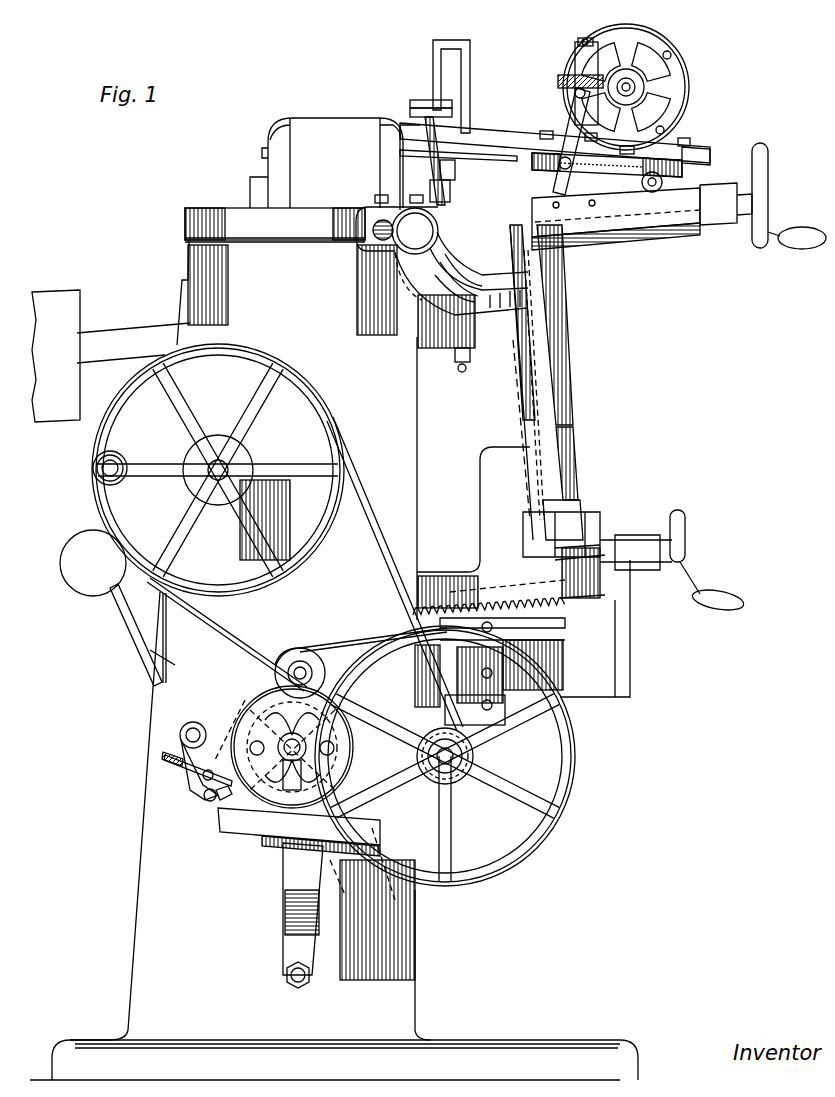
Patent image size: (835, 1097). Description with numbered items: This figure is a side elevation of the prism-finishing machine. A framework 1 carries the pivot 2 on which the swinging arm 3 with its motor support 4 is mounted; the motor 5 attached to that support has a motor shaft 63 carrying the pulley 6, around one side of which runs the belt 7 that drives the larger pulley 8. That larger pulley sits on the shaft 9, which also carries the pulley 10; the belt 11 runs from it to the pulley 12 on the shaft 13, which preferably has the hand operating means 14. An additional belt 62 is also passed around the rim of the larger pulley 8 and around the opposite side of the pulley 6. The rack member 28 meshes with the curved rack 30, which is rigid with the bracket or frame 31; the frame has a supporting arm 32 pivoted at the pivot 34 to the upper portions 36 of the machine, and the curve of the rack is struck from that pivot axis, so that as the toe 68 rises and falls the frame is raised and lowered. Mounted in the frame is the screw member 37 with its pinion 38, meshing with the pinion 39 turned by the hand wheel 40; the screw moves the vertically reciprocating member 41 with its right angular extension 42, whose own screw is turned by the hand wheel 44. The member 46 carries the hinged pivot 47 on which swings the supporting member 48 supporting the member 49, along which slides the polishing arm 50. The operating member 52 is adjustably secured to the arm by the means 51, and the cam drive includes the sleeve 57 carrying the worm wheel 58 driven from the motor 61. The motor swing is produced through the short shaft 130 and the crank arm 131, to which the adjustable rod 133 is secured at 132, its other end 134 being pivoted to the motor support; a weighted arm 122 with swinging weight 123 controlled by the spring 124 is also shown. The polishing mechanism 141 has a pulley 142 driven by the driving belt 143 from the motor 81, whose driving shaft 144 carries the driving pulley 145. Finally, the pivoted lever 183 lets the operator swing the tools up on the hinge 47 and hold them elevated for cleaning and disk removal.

The framework 1 is at (140, 893).
The pivot 2 is at (288, 975).
The swinging arm 3 is at (296, 878).
The motor support 4 is at (236, 834).
The motor 5 is at (262, 706).
The pulley 6 is at (256, 716).
The belt 7 is at (352, 648).
The larger pulley 8 is at (556, 770).
The shaft 9 is at (472, 755).
The pulley 10 is at (452, 782).
The belt 11 is at (372, 548).
The pulley 12 is at (252, 577).
The shaft 13 is at (224, 466).
The hand operating means 14 is at (100, 468).
The rack member 28 is at (560, 636).
The curved rack 30 is at (480, 580).
The bracket or frame 31 is at (525, 404).
The supporting arm 32 is at (474, 272).
The pivot 34 is at (433, 232).
The upper portions of the machine 36 is at (412, 306).
The screw member 37 is at (572, 472).
The pinion 38 is at (600, 530).
The pinion 39 is at (625, 548).
The hand wheel 40 is at (686, 548).
The vertically reciprocating member 41 is at (562, 368).
The right angular extension 42 is at (702, 225).
The hand wheel 44 is at (768, 166).
The member 46 is at (625, 192).
The hinged pivot 47 is at (663, 184).
The supporting member 48 is at (593, 178).
The member 49 is at (690, 150).
The polishing arm 50 is at (510, 128).
The means 51 is at (690, 142).
The operating member 52 is at (630, 146).
The sleeve 57 is at (578, 62).
The worm wheel 58 is at (560, 80).
The motor 61 is at (686, 82).
The additional belt 62 is at (326, 648).
The motor shaft 63 is at (246, 742).
The toe 68 is at (575, 582).
The motor 81 is at (325, 125).
The weighted arm 122 is at (140, 647).
The swinging weight 123 is at (92, 586).
The spring 124 is at (160, 640).
The short shaft 130 is at (193, 722).
The crank arm 131 is at (190, 752).
The adjustable securing point 132 is at (205, 778).
The adjustable rod 133 is at (206, 798).
The rod end 134 is at (370, 912).
The polishing mechanism 141 is at (468, 63).
The pulley 142 is at (416, 102).
The driving belt 143 is at (410, 112).
The driving shaft 144 is at (455, 196).
The driving pulley 145 is at (455, 180).
The pivoted lever 183 is at (565, 120).